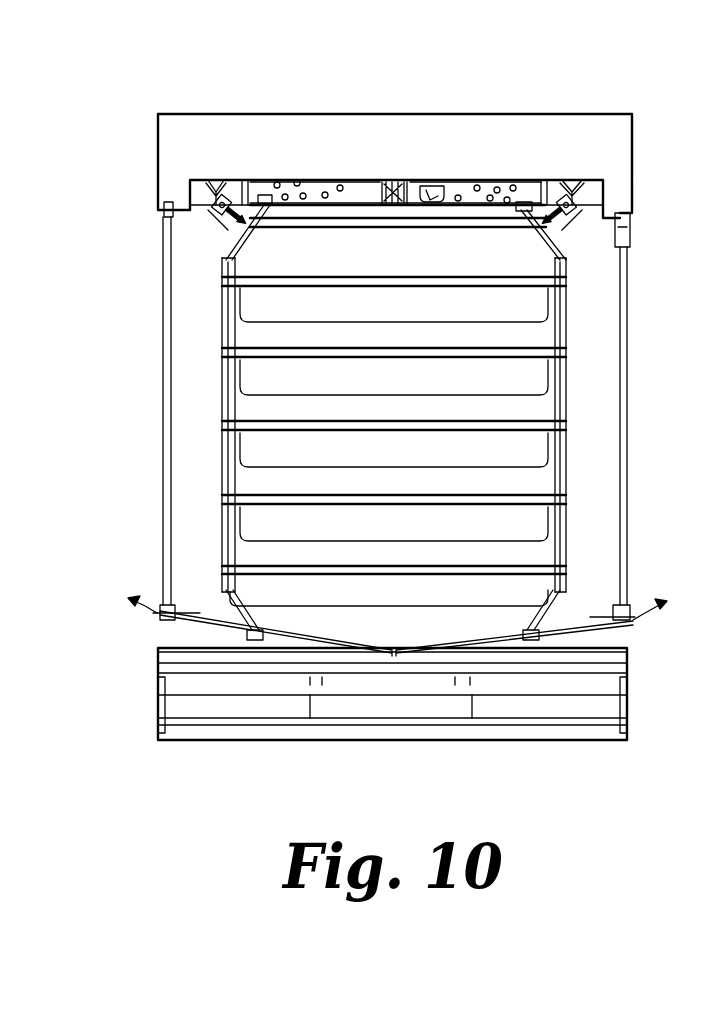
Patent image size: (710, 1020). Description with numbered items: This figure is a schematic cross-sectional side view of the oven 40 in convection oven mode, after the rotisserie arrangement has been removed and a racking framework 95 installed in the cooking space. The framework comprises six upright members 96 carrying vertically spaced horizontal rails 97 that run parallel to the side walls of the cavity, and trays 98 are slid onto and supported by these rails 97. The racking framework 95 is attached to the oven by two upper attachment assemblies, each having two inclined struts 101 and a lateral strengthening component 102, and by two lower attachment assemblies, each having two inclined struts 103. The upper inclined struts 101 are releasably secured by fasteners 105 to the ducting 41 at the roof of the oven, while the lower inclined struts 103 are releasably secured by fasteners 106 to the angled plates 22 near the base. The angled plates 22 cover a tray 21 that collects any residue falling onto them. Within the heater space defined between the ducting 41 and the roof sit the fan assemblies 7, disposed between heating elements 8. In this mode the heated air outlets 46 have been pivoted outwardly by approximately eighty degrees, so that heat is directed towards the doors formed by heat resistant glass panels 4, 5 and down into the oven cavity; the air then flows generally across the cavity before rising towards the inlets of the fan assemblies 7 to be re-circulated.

The oven 40 is at (455, 92).
The racking framework 95 is at (318, 214).
The heating elements 8 is at (487, 198).
The fan assemblies 7 is at (430, 192).
The ducting 41 is at (469, 190).
The fasteners 105 is at (265, 197).
The heated air outlets 46 is at (226, 224).
The inclined struts 101 is at (249, 242).
The lateral strengthening component 102 is at (445, 226).
The heat resistant glass panel 4 is at (383, 411).
The heat resistant glass panel 5 is at (624, 292).
The upright members 96 is at (226, 332).
The horizontal rails 97 is at (418, 286).
The trays 98 is at (534, 305).
The inclined struts 103 is at (232, 604).
The fasteners 106 is at (272, 627).
The angled plates 22 is at (572, 620).
The tray 21 is at (583, 689).